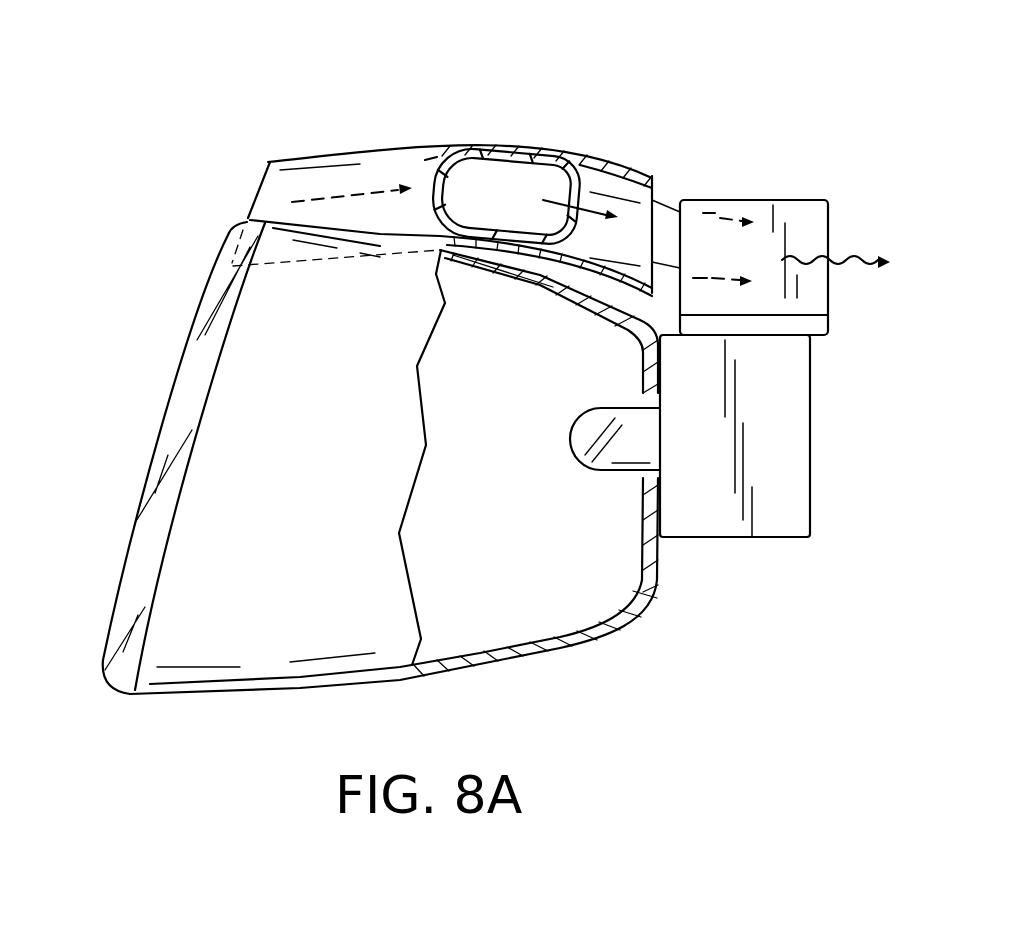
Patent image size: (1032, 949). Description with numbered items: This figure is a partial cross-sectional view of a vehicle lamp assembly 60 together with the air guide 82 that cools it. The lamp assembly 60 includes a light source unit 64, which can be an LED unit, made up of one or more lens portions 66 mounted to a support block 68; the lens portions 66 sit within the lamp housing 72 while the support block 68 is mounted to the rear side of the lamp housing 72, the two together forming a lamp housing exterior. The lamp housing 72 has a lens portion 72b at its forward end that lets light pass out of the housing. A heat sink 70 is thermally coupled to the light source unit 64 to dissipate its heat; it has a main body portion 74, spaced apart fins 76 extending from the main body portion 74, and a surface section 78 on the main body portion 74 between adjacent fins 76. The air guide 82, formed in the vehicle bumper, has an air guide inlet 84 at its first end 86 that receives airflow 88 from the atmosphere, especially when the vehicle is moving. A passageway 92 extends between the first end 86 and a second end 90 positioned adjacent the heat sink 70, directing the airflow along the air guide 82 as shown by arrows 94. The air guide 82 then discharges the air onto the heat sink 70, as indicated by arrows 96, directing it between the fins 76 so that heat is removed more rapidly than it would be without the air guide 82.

The lamp assembly 60 is at (704, 636).
The light source unit 64 is at (818, 496).
The lens portions 66 is at (595, 435).
The support block 68 is at (795, 442).
The heat sink 70 is at (834, 226).
The lamp housing 72 is at (234, 698).
The lens portion 72b is at (157, 453).
The main body portion 74 is at (778, 330).
The spaced apart fins 76 is at (795, 210).
The surface section 78 is at (797, 313).
The air guide 82 is at (427, 135).
The air guide inlet 84 is at (285, 180).
The first end 86 is at (265, 165).
The airflow 88 is at (228, 198).
The second end 90 is at (658, 176).
The passageway 92 is at (478, 170).
The arrows 94 is at (372, 197).
The arrows 96 is at (708, 213).